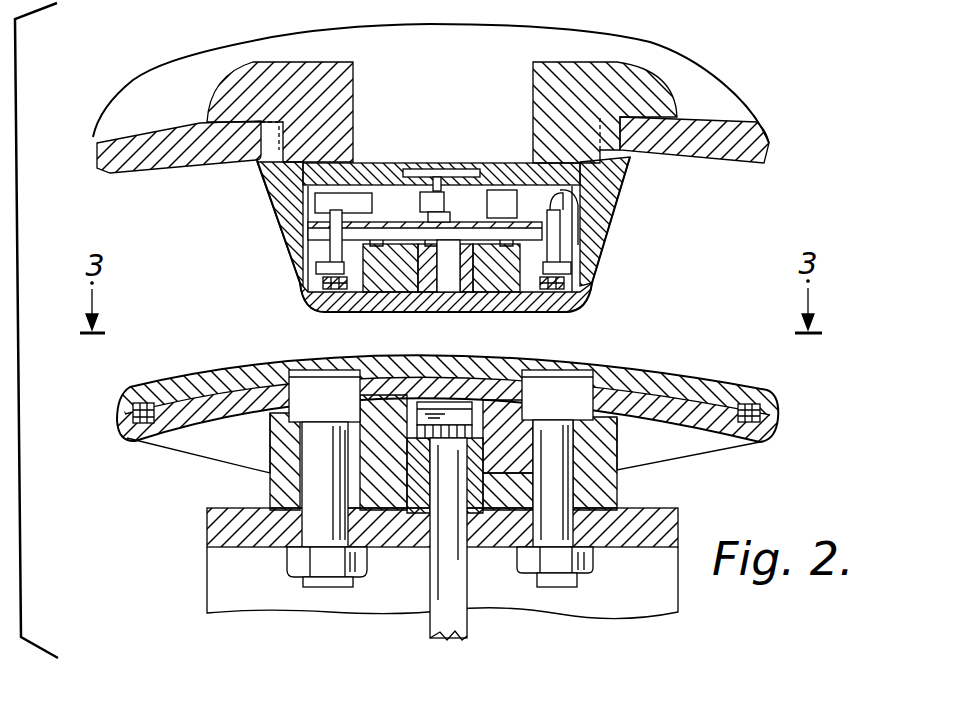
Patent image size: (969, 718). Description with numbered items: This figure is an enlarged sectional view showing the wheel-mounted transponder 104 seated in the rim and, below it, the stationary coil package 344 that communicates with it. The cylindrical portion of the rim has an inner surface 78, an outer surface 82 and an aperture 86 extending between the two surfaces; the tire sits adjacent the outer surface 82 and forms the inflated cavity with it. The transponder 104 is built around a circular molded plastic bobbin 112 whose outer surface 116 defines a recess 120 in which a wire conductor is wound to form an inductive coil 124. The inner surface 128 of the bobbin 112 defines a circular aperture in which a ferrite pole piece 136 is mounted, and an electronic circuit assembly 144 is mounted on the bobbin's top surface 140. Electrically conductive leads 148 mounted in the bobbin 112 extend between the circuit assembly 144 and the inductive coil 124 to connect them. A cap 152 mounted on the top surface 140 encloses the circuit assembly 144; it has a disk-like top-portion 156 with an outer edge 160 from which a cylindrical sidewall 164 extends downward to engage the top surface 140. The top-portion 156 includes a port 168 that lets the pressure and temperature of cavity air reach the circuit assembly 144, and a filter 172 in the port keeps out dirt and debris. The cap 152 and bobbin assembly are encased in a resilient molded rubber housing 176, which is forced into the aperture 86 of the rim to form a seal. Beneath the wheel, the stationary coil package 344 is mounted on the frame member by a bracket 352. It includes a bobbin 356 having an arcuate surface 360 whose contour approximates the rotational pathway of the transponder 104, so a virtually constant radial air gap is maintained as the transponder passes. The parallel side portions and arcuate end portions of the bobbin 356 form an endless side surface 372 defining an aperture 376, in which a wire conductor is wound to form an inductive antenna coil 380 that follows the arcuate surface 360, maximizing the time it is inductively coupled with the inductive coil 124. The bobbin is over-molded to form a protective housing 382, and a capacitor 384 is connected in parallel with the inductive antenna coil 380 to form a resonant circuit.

The inner surface 78 is at (757, 167).
The outer surface 82 is at (758, 128).
The aperture 86 is at (600, 113).
The transponder 104 is at (420, 195).
The bobbin 112 is at (463, 312).
The outer surface 116 is at (300, 263).
The recess 120 is at (323, 275).
The inductive coil 124 is at (327, 297).
The inner surface 128 is at (530, 258).
The ferrite pole piece 136 is at (560, 283).
The top surface 140 is at (550, 212).
The circuit assembly 144 is at (482, 192).
The electrically conductive leads 148 is at (553, 192).
The cap 152 is at (368, 162).
The top-portion 156 is at (430, 162).
The outer edge 160 is at (267, 166).
The cylindrical sidewall 164 is at (277, 203).
The port 168 is at (447, 165).
The filter 172 is at (458, 165).
The molded rubber housing 176 is at (613, 62).
The stationary coil package 344 is at (464, 474).
The bracket 352 is at (680, 600).
The bobbin 356 is at (477, 384).
The arcuate surface 360 is at (707, 373).
The side surface 372 is at (777, 400).
The aperture 376 is at (745, 432).
The inductive antenna coil 380 is at (135, 414).
The housing 382 is at (197, 375).
The capacitor 384 is at (345, 404).